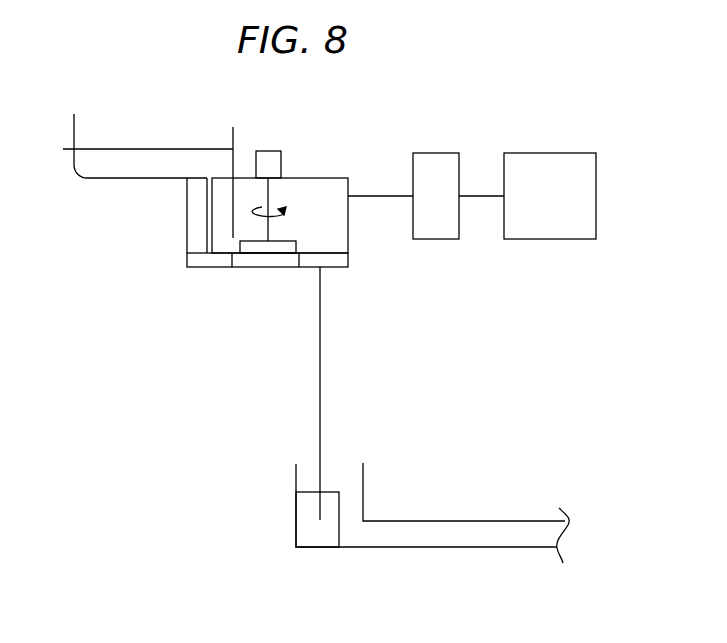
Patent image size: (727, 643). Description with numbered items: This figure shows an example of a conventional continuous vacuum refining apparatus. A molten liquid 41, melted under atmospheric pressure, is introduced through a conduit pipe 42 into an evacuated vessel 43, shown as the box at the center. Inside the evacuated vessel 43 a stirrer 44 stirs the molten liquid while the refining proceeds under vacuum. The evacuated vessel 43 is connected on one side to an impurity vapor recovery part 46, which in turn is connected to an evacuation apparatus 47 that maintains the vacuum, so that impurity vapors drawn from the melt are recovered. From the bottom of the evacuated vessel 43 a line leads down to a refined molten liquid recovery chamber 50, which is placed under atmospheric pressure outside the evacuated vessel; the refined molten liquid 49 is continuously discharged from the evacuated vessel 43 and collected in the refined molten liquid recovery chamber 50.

The molten liquid 41 is at (175, 168).
The conduit pipe 42 is at (118, 178).
The evacuated vessel 43 is at (280, 268).
The stirrer 44 is at (274, 245).
The impurity vapor recovery part 46 is at (432, 239).
The evacuation apparatus 47 is at (550, 239).
The refined molten liquid 49 is at (313, 538).
The refined molten liquid recovery chamber 50 is at (296, 510).